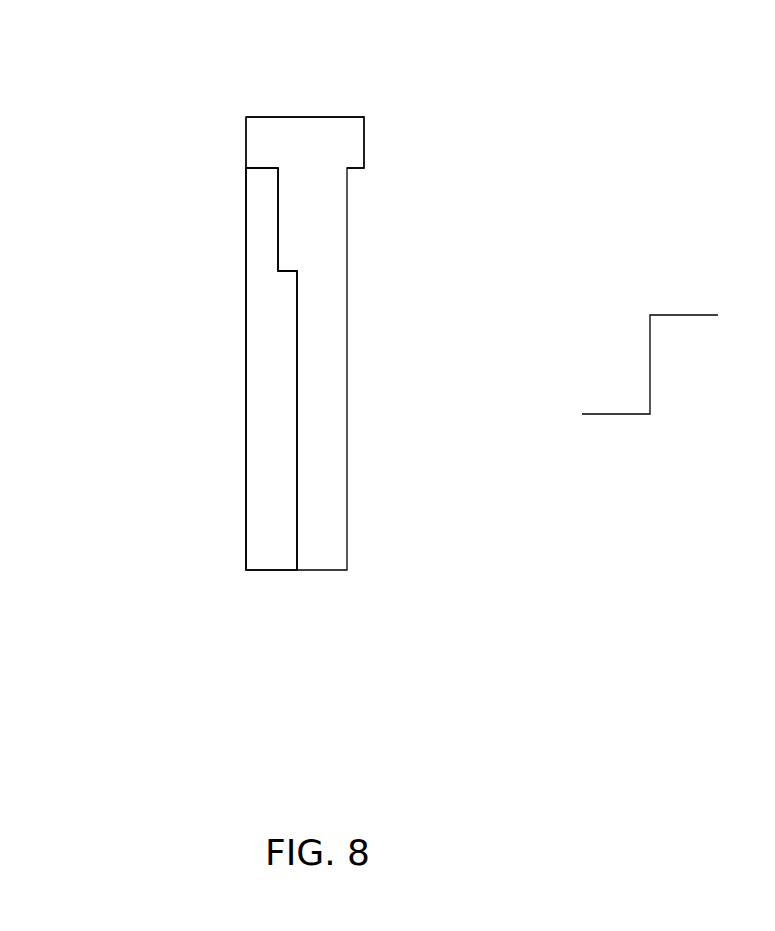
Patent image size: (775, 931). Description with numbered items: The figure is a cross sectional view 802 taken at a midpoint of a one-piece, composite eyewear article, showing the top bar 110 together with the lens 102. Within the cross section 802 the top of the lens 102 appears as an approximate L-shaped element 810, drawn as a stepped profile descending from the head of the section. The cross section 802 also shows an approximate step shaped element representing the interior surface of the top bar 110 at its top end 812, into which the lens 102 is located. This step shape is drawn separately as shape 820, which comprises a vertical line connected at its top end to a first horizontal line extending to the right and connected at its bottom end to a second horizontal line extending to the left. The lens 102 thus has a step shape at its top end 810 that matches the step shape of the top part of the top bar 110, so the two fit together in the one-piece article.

The cross sectional view 802 is at (245, 66).
The top bar 110 is at (366, 137).
The top end 812 is at (245, 138).
The L-shaped element 810 is at (275, 247).
The lens 102 is at (245, 467).
The step shape 820 is at (697, 310).